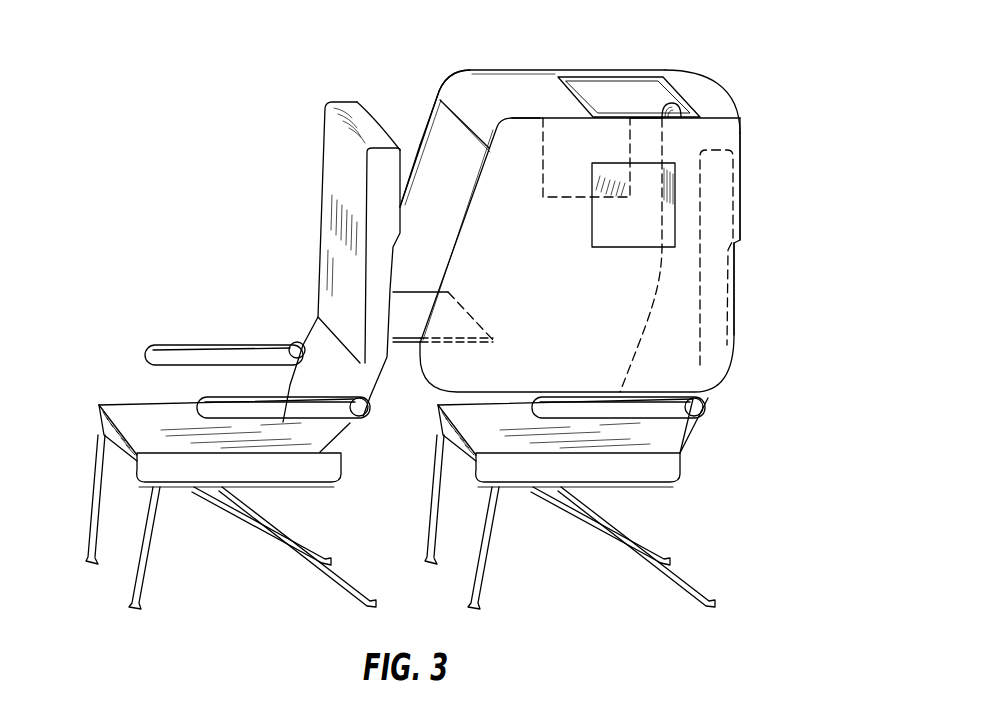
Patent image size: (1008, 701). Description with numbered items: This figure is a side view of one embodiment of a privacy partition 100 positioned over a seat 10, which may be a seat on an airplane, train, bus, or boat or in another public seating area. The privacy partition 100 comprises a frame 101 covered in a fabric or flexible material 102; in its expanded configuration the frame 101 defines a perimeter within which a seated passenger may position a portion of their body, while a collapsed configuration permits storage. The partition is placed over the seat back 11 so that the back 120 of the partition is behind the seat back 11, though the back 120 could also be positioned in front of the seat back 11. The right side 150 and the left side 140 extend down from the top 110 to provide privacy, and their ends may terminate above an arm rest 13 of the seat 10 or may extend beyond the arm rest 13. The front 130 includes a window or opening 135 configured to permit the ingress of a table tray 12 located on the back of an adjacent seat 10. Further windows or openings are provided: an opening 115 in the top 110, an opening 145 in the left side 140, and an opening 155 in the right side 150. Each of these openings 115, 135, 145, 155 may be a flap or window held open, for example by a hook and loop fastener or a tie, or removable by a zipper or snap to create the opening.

The privacy partition 100 is at (793, 46).
The seat 10 is at (100, 430).
The seat back 11 is at (333, 257).
The table tray 12 is at (413, 342).
The arm rest 13 is at (178, 343).
The frame 101 is at (420, 148).
The fabric 102 is at (713, 298).
The top 110 is at (527, 82).
The window or opening 115 is at (643, 93).
The back 120 is at (762, 217).
The front 130 is at (430, 183).
The window or opening 135 is at (430, 245).
The left side 140 is at (665, 335).
The window or opening 145 is at (652, 213).
The right side 150 is at (427, 62).
The window or opening 155 is at (623, 182).